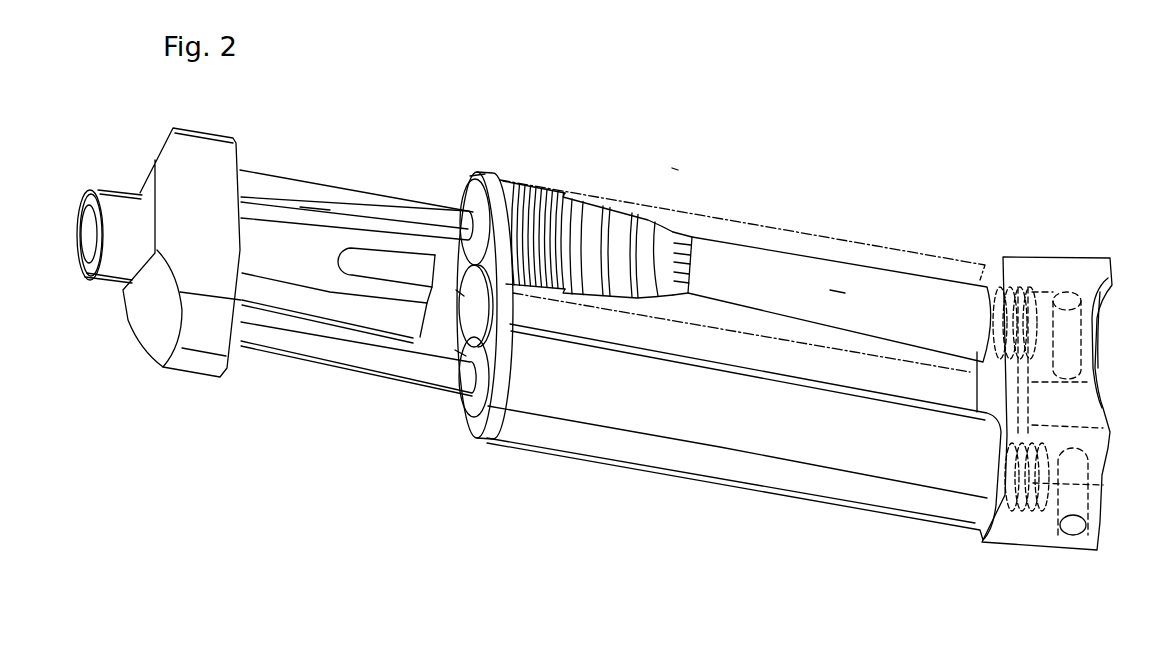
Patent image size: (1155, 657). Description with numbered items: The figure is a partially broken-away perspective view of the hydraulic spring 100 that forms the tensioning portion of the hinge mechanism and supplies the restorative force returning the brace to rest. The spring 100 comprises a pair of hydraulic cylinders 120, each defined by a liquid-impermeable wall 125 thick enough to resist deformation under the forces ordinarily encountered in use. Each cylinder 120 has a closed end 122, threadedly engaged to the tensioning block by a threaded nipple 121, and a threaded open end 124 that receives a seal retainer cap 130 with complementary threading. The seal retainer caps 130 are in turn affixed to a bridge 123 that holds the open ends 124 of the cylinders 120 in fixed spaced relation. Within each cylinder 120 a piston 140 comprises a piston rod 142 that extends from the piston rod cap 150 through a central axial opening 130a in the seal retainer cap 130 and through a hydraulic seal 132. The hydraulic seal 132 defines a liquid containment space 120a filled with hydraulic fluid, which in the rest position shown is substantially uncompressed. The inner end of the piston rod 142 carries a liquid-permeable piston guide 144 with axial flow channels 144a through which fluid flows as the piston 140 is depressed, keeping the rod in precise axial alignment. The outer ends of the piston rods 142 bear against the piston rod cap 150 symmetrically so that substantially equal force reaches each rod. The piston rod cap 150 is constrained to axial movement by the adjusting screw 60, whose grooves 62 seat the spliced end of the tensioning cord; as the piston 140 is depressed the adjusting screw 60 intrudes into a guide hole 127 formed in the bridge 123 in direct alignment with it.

The adjusting screw 60 is at (250, 232).
The grooves 62 is at (367, 252).
The hydraulic spring 100 is at (675, 166).
The hydraulic cylinder 120 is at (893, 290).
The liquid containment space 120a is at (837, 285).
The threaded nipple 121 is at (1008, 512).
The closed end 122 is at (995, 284).
The bridge 123 is at (460, 293).
The open end 124 is at (474, 178).
The liquid-impermeable wall 125 is at (790, 237).
The guide hole 127 is at (463, 353).
The seal retainer cap 130 is at (463, 208).
The central axial opening 130a is at (462, 393).
The hydraulic seal 132 is at (593, 206).
The piston 140 is at (303, 176).
The piston rod 142 is at (328, 198).
The piston guide 144 is at (678, 239).
The axial flow channels 144a is at (693, 272).
The piston rod cap 150 is at (172, 145).